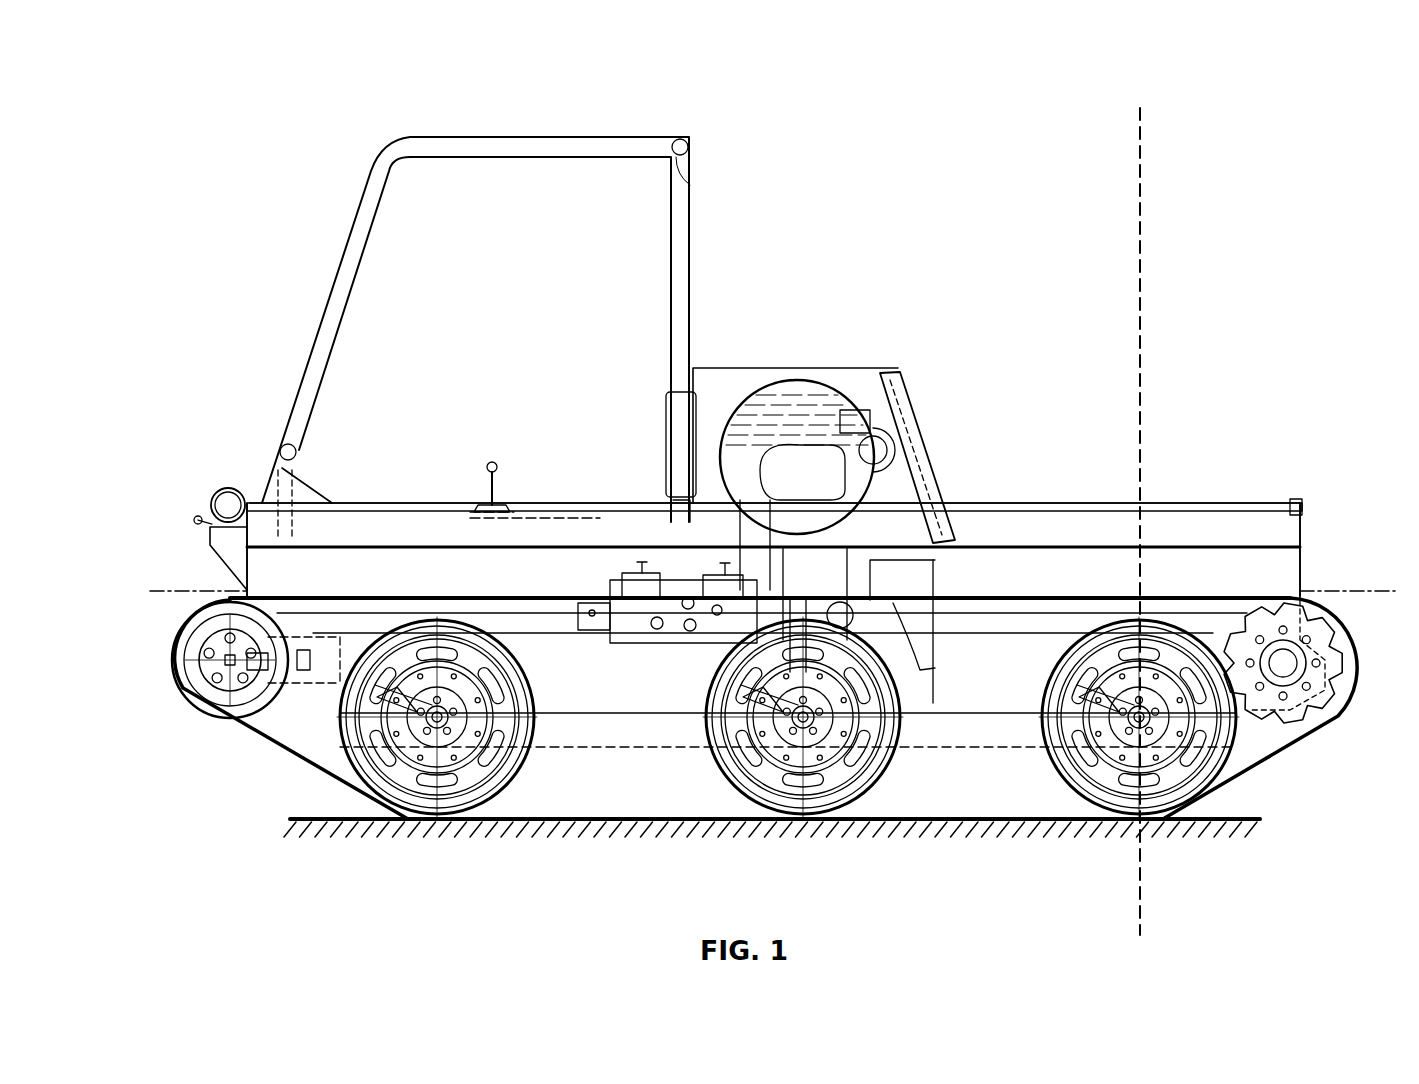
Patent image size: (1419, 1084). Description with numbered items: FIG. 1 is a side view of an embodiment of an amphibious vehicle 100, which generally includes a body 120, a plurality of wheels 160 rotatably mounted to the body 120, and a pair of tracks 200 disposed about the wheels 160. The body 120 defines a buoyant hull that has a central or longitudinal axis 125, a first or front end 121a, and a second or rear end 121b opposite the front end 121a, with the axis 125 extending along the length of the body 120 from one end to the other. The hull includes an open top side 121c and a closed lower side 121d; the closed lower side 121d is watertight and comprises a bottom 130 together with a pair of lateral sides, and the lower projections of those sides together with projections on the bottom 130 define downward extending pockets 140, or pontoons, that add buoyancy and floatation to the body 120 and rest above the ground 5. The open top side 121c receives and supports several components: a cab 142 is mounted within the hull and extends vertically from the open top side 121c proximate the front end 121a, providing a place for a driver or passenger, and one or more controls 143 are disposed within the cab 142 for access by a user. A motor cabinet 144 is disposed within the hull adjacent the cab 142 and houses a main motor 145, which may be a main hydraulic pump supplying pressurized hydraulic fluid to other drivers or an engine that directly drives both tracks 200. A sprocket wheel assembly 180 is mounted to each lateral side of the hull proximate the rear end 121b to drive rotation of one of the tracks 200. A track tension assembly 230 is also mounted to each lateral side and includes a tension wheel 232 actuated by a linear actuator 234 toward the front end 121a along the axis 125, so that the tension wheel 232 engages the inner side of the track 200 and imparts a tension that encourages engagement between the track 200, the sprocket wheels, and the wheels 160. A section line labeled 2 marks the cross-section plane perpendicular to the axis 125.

The amphibious vehicle 100 is at (290, 92).
The body 120 is at (1300, 496).
The front end 121a is at (180, 566).
The rear end 121b is at (1325, 556).
The open top side 121c is at (1003, 496).
The closed lower side 121d is at (963, 754).
The longitudinal axis 125 is at (160, 594).
The bottom 130 is at (617, 748).
The pockets 140 is at (582, 742).
The cab 142 is at (356, 208).
The controls 143 is at (476, 454).
The motor cabinet 144 is at (900, 392).
The main motor 145 is at (745, 380).
The wheels 160 is at (507, 788).
The sprocket wheel assembly 180 is at (1340, 730).
The tracks 200 is at (280, 757).
The track tension assembly 230 is at (166, 668).
The tension wheel 232 is at (240, 726).
The linear actuator 234 is at (305, 701).
The ground 5 is at (307, 816).
The section line 2- 2 is at (1083, 935).